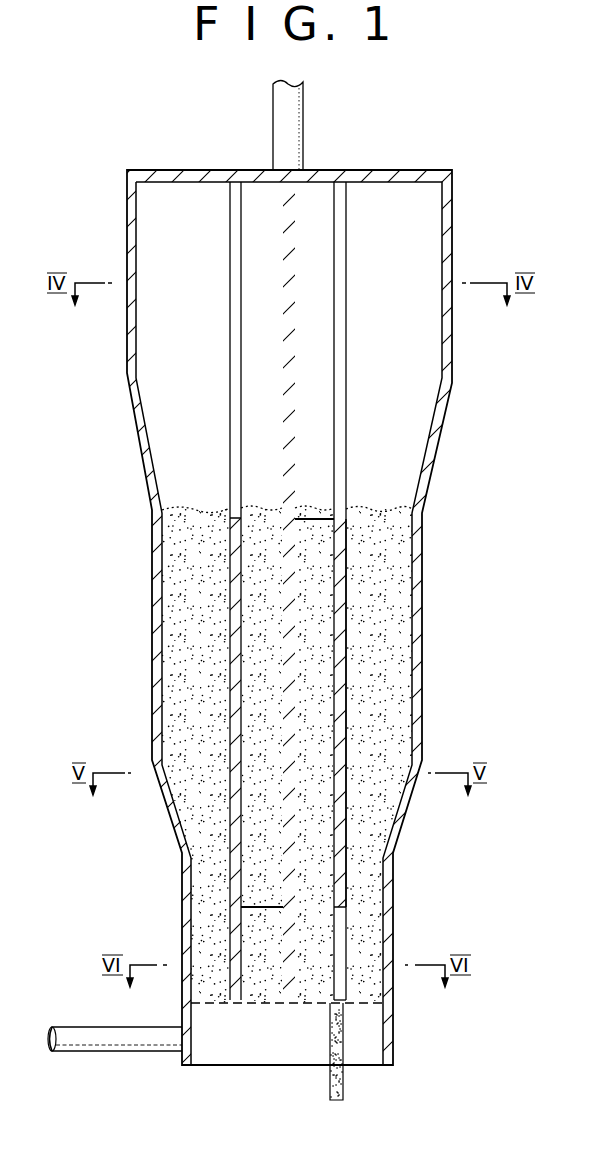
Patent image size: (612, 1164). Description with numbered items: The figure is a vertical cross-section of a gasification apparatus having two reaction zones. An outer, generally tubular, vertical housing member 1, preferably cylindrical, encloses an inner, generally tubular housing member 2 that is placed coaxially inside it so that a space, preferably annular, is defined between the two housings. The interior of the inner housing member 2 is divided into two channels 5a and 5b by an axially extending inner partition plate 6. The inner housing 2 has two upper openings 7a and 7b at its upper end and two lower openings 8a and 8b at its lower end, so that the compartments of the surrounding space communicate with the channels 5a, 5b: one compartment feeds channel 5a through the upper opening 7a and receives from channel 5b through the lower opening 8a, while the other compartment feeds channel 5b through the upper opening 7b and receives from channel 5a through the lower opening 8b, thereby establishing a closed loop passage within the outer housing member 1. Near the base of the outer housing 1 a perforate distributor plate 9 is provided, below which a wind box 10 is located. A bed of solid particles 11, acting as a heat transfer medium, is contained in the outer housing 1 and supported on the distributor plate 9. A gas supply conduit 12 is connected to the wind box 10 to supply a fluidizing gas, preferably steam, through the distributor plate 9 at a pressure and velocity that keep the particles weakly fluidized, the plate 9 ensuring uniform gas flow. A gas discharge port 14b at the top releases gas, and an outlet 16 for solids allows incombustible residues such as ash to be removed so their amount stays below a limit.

The outer housing member 1 is at (445, 408).
The inner housing member 2 is at (345, 715).
The channel 5a is at (250, 562).
The channel 5b is at (313, 651).
The inner partition plate 6 is at (297, 559).
The upper opening 7a is at (237, 413).
The upper opening 7b is at (320, 408).
The lower opening 8a is at (340, 948).
The lower opening 8b is at (253, 953).
The perforate distributor plate 9 is at (262, 1004).
The wind box 10 is at (280, 1029).
The bed of solid particles 11 is at (203, 680).
The gas supply conduit 12 is at (115, 1052).
The gas discharge port 14b is at (304, 126).
The outlet for solids 16 is at (344, 1068).